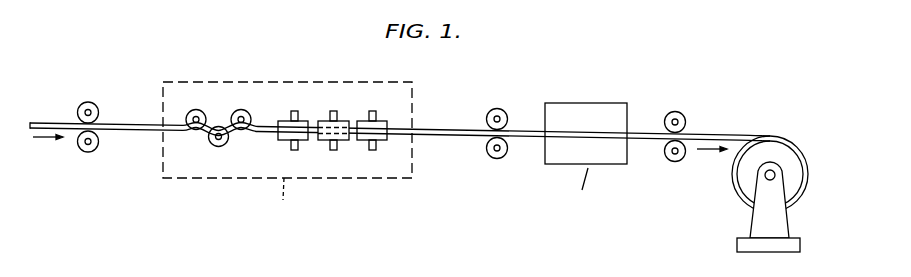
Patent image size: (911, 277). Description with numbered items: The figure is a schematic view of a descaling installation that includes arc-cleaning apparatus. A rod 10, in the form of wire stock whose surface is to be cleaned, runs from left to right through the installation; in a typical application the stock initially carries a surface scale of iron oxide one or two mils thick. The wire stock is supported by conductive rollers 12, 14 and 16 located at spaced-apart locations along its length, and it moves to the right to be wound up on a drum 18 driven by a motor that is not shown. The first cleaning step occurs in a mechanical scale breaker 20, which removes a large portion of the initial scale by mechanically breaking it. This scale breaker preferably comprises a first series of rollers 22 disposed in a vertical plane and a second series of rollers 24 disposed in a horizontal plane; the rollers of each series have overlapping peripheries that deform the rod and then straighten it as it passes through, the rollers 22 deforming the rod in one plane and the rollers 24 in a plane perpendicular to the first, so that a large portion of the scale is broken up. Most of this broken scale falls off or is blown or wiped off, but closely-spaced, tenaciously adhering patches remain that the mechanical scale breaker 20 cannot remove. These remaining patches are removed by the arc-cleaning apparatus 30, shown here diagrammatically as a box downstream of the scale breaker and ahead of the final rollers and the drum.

The rod 10 is at (132, 123).
The conductive rollers 12 is at (88, 101).
The conductive rollers 14 is at (498, 108).
The conductive rollers 16 is at (675, 110).
The drum 18 is at (748, 188).
The mechanical scale breaker 20 is at (273, 80).
The first series of rollers 22 is at (218, 126).
The second series of rollers 24 is at (360, 121).
The arc-cleaning apparatus 30 is at (597, 97).